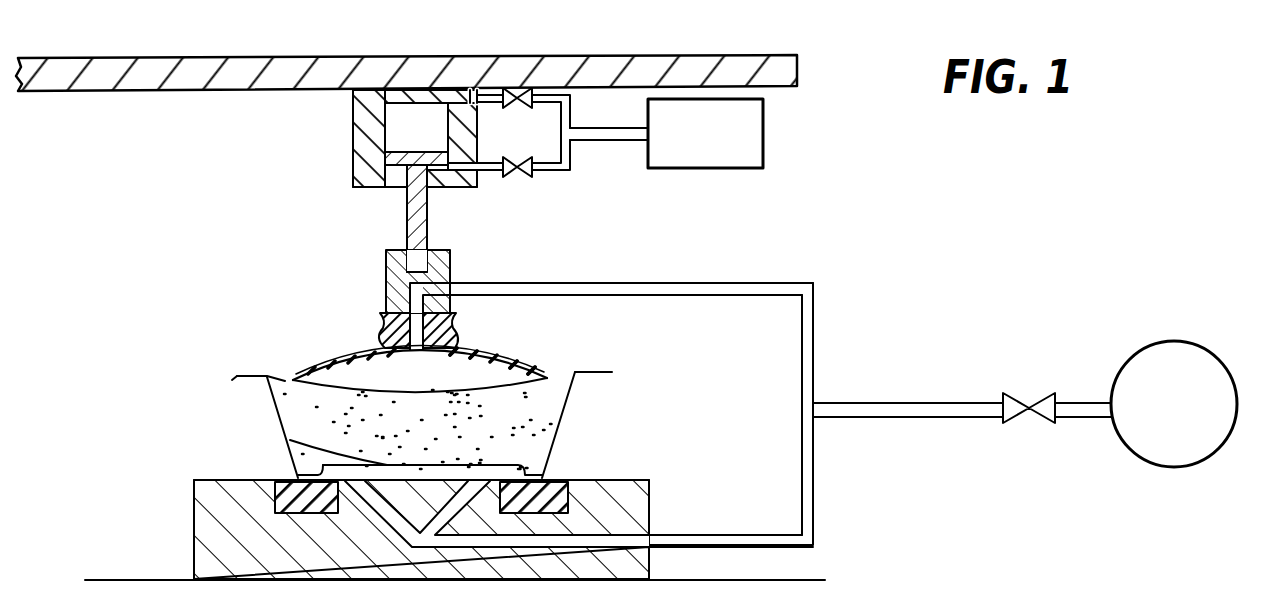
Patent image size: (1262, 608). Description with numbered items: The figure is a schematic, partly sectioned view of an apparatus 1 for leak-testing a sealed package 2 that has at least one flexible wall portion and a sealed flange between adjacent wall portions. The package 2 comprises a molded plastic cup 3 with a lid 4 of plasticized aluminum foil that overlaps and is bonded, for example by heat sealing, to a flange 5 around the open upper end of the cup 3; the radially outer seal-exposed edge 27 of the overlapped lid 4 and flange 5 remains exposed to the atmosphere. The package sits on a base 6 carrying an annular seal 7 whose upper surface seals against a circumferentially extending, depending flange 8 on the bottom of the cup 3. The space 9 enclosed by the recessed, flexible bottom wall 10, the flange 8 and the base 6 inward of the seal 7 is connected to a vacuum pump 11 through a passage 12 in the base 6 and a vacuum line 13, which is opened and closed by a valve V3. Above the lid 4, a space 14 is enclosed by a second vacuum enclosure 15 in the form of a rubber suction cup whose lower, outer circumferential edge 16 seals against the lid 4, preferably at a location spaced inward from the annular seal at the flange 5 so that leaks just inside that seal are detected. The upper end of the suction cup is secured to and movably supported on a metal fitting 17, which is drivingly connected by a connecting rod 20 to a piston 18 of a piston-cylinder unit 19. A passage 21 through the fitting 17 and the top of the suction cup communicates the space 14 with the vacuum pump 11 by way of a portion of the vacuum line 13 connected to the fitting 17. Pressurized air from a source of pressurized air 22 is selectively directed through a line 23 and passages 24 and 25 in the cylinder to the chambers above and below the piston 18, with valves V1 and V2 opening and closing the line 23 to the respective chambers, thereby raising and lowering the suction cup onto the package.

The apparatus 1 is at (148, 204).
The sealed package 2 is at (584, 383).
The cup 3 is at (563, 415).
The lid 4 is at (282, 377).
The flange 5 is at (612, 372).
The base 6 is at (650, 490).
The annular seal 7 is at (560, 482).
The depending flange 8 is at (548, 462).
The space 9 is at (325, 474).
The flexible bottom wall 10 is at (290, 433).
The vacuum pump 11 is at (1122, 447).
The passage 12 is at (495, 549).
The vacuum line 13 is at (795, 548).
The space 14 is at (365, 368).
The second vacuum enclosure 15 is at (480, 347).
The lower outer circumferential edge 16 is at (540, 376).
The metal fitting 17 is at (450, 268).
The piston 18 is at (392, 157).
The piston-cylinder unit 19 is at (348, 196).
The connecting rod 20 is at (428, 228).
The passage 21 is at (425, 335).
The source of pressurized air 22 is at (660, 127).
The line 23 is at (573, 150).
The passage 24 is at (472, 93).
The passage 25 is at (470, 172).
The seal-exposed edge 27 is at (240, 378).
The valve V1 is at (519, 127).
The valve V2 is at (519, 188).
The valve V3 is at (1057, 394).